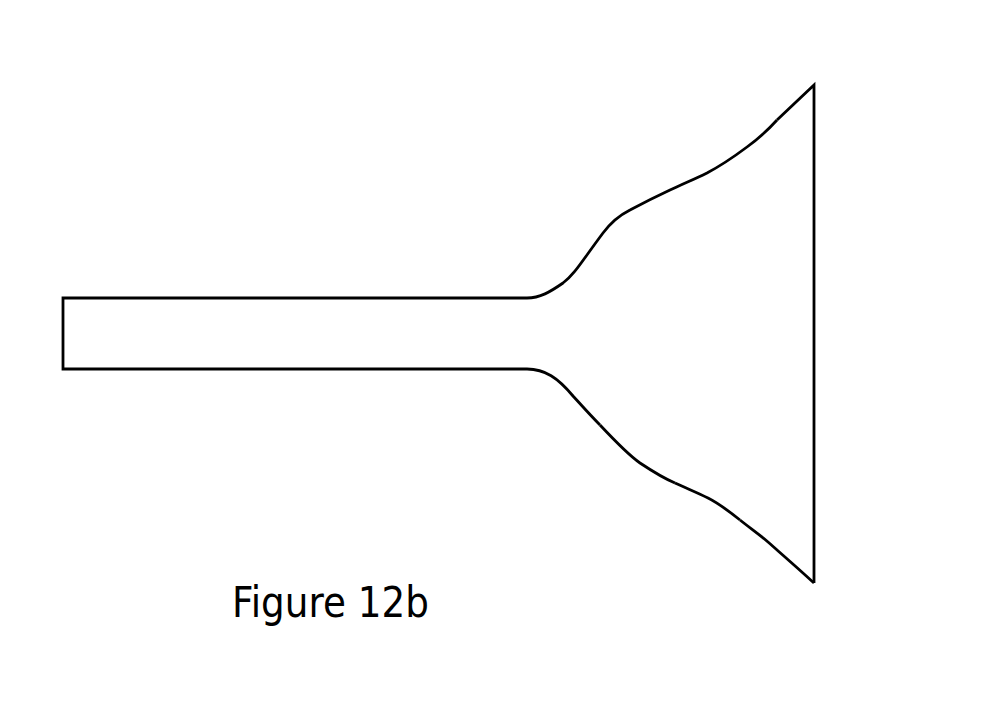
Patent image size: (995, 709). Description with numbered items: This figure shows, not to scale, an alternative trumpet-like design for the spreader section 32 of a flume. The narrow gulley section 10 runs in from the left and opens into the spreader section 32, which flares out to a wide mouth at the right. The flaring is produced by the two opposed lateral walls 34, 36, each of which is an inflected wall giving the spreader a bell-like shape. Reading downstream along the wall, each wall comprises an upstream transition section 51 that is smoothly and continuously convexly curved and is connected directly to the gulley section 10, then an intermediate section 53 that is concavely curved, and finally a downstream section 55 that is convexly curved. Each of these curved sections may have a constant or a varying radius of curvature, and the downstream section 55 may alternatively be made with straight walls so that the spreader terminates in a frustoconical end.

The gulley section 10 is at (288, 370).
The spreader section 32 is at (777, 120).
The lateral wall 36 is at (707, 173).
The transition section 51 is at (573, 395).
The intermediate section 53 is at (639, 465).
The lateral wall 34 is at (710, 496).
The downstream section 55 is at (768, 543).